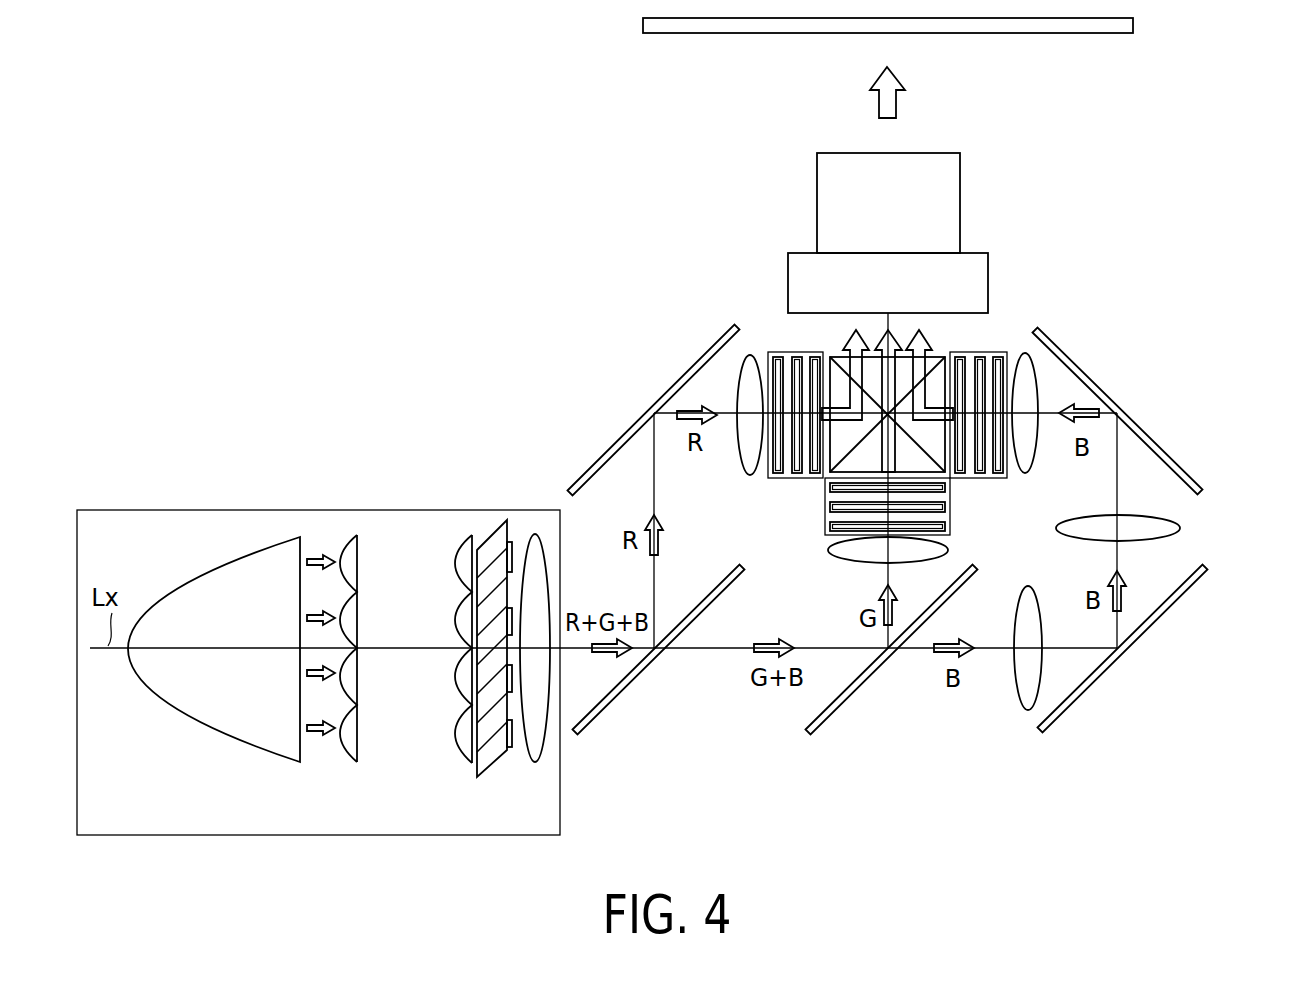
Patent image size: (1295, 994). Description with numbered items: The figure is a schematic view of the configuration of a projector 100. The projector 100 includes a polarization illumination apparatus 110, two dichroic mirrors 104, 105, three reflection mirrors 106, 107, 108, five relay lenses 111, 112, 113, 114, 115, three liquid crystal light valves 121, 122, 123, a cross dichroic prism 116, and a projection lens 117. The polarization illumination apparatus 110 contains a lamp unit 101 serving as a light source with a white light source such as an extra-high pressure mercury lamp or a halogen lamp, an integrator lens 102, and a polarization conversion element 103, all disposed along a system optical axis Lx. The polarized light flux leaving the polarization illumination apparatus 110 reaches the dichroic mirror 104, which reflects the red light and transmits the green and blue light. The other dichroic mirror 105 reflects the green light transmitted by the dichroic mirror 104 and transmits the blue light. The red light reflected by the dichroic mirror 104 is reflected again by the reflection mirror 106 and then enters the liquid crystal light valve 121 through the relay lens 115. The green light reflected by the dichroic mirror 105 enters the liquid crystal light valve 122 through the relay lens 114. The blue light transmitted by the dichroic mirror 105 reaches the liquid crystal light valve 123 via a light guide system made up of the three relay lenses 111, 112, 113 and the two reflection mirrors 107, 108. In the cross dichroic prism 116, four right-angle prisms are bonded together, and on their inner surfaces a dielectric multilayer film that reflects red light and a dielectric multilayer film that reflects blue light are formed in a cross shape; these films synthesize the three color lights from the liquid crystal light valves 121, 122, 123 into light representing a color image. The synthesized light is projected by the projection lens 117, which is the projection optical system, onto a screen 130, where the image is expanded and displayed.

The projector 100 is at (1176, 116).
The lamp unit 101 is at (210, 742).
The integrator lens 102 is at (352, 765).
The polarization conversion element 103 is at (455, 783).
The dichroic mirror 104 is at (618, 698).
The dichroic mirror 105 is at (855, 698).
The reflection mirror 106 is at (654, 405).
The reflection mirror 107 is at (1082, 698).
The reflection mirror 108 is at (1122, 410).
The polarization illumination apparatus 110 is at (333, 510).
The relay lens 111 is at (1028, 712).
The relay lens 112 is at (1180, 528).
The relay lens 113 is at (1026, 476).
The relay lens 114 is at (832, 552).
The relay lens 115 is at (750, 478).
The cross dichroic prism 116 is at (945, 357).
The projection lens 117 is at (948, 200).
The liquid crystal light valve 121 is at (785, 352).
The liquid crystal light valve 122 is at (950, 530).
The liquid crystal light valve 123 is at (992, 352).
The screen 130 is at (1058, 35).